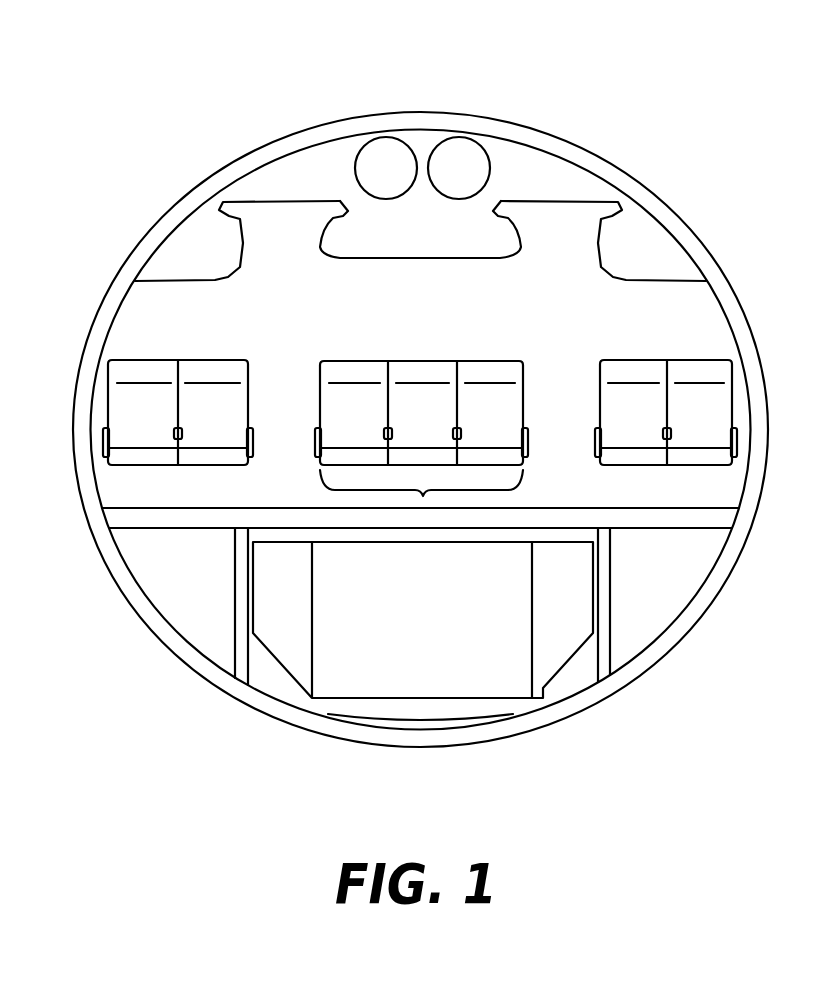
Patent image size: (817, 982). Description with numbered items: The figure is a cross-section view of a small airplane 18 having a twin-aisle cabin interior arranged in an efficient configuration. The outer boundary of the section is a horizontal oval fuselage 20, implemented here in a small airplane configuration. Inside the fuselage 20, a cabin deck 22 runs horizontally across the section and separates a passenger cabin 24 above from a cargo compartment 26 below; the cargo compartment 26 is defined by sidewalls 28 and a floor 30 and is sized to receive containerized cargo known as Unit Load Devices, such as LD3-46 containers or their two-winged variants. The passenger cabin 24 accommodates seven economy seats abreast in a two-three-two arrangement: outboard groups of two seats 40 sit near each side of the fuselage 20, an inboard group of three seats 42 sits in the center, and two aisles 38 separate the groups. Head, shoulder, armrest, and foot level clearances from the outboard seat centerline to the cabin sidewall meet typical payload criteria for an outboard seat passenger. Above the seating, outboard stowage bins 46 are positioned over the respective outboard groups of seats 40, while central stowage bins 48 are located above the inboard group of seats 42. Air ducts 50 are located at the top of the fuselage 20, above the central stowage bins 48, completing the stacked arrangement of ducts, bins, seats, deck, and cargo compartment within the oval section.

The small airplane 18 is at (634, 69).
The horizontal oval fuselage 20 is at (622, 172).
The cabin deck 22 is at (657, 524).
The passenger cabin 24 is at (700, 310).
The cargo compartment 26 is at (567, 679).
The sidewalls 28 is at (240, 652).
The floor 30 is at (352, 712).
The aisles 38 is at (287, 377).
The outboard groups of two seats 40 is at (203, 362).
The inboard group of three seats 42 is at (423, 496).
The outboard stowage bins 46 is at (177, 252).
The central stowage bins 48 is at (349, 251).
The air ducts 50 is at (458, 165).